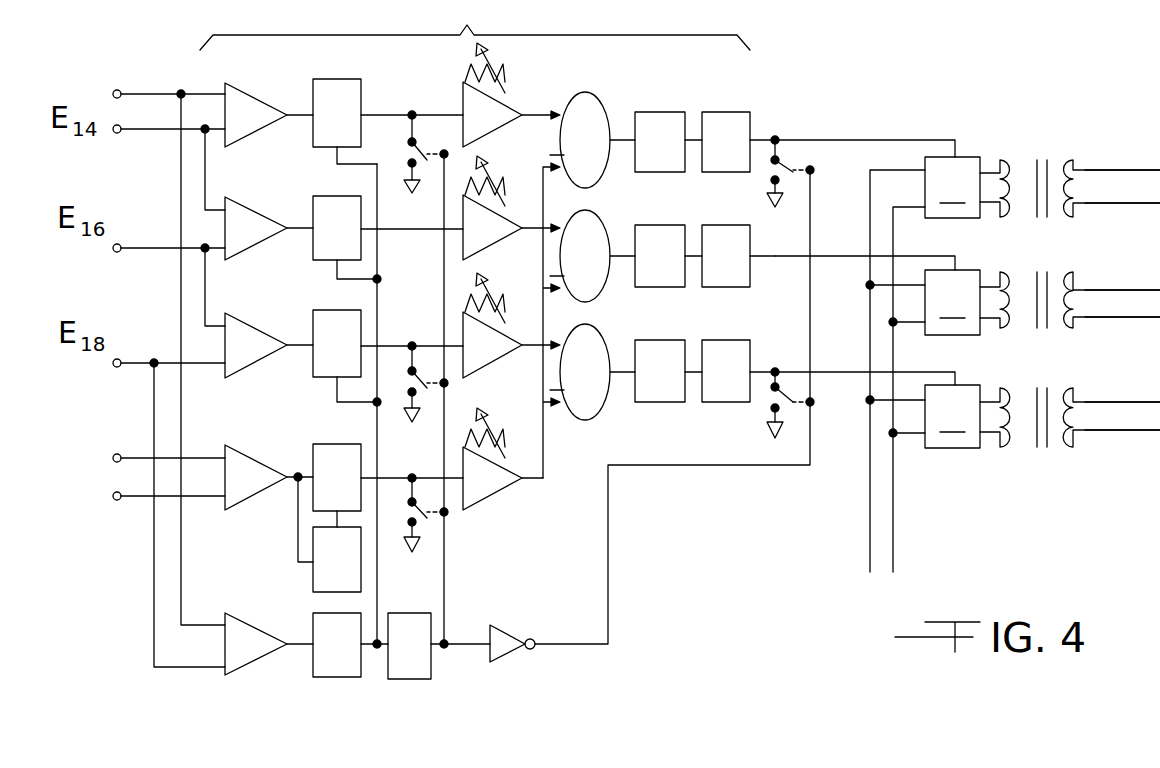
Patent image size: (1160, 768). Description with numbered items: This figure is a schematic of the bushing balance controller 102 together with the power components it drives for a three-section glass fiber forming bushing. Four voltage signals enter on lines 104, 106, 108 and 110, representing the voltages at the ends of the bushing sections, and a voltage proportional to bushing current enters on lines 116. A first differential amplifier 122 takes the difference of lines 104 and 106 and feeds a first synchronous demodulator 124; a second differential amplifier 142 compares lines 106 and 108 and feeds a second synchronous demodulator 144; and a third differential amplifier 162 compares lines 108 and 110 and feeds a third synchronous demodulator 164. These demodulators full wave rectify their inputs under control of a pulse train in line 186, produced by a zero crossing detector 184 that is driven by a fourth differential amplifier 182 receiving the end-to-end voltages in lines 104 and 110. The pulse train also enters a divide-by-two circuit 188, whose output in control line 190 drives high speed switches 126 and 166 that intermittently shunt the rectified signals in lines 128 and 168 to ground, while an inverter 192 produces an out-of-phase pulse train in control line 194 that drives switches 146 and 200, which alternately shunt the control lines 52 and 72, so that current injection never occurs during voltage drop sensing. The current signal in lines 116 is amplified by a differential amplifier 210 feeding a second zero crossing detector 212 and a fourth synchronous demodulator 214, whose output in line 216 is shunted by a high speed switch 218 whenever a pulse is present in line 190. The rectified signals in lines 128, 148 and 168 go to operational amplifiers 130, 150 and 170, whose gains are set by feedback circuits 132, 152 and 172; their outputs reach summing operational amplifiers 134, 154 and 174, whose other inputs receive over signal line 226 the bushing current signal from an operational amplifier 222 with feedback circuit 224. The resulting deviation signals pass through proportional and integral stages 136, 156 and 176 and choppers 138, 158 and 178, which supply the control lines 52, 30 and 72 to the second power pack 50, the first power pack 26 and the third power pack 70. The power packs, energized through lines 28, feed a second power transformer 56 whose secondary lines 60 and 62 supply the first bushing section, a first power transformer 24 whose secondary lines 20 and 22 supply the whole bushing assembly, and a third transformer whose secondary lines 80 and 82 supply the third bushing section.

The bushing balance controller 102 is at (475, 25).
The line 104 is at (136, 92).
The line 106 is at (144, 136).
The line 108 is at (147, 252).
The line 110 is at (135, 366).
The control lines 116 is at (128, 491).
The first differential amplifier 122 is at (236, 92).
The first synchronous demodulator 124 is at (336, 78).
The high speed switch 126 is at (438, 152).
The line 128 is at (384, 112).
The operational amplifier 130 is at (513, 100).
The feedback circuit 132 is at (506, 60).
The summing operational amplifier 134 is at (600, 96).
The proportional and integral stage 136 is at (674, 110).
The chopper 138 is at (756, 109).
The second differential amplifier 142 is at (258, 208).
The second synchronous demodulator 144 is at (312, 254).
The high speed switch 146 is at (790, 160).
The line 148 is at (384, 240).
The operational amplifier 150 is at (486, 240).
The feedback circuit 152 is at (510, 174).
The summing operational amplifier 154 is at (604, 226).
The proportional and integral stage 156 is at (668, 226).
The chopper 158 is at (754, 256).
The third differential amplifier 162 is at (247, 330).
The third synchronous demodulator 164 is at (312, 368).
The high speed switch 166 is at (402, 385).
The line 168 is at (390, 344).
The operational amplifier 170 is at (486, 362).
The feedback circuit 172 is at (488, 296).
The summing operational amplifier 174 is at (604, 336).
The proportional and integral stage 176 is at (660, 336).
The chopper 178 is at (738, 334).
The fourth differential amplifier 182 is at (250, 672).
The zero crossing detector 184 is at (345, 680).
The line 186 is at (377, 425).
The divide-by-two circuit 188 is at (410, 680).
The control line 190 is at (446, 578).
The inverter 192 is at (500, 625).
The control line 194 is at (675, 468).
The high speed switch 200 is at (772, 404).
The fourth differential amplifier 210 is at (269, 462).
The second zero crossing detector 212 is at (312, 585).
The fourth synchronous demodulator 214 is at (300, 497).
The line 216 is at (384, 490).
The high speed switch 218 is at (404, 516).
The fourth operational amplifier 222 is at (484, 498).
The feedback circuit 224 is at (506, 423).
The signal line 226 is at (546, 445).
The second control line 52 is at (860, 140).
The control line 30 is at (836, 254).
The third control line 72 is at (836, 370).
The lines 28 is at (872, 540).
The second power pack 50 is at (952, 187).
The first power pack 26 is at (1066, 382).
The third power pack 70 is at (952, 416).
The second power transformer 56 is at (1066, 147).
The first power transformer 24 is at (1066, 262).
The line 60 is at (1120, 170).
The line 62 is at (1100, 206).
The line 20 is at (1102, 290).
The line 22 is at (1095, 320).
The line 80 is at (1102, 400).
The line 82 is at (1095, 434).